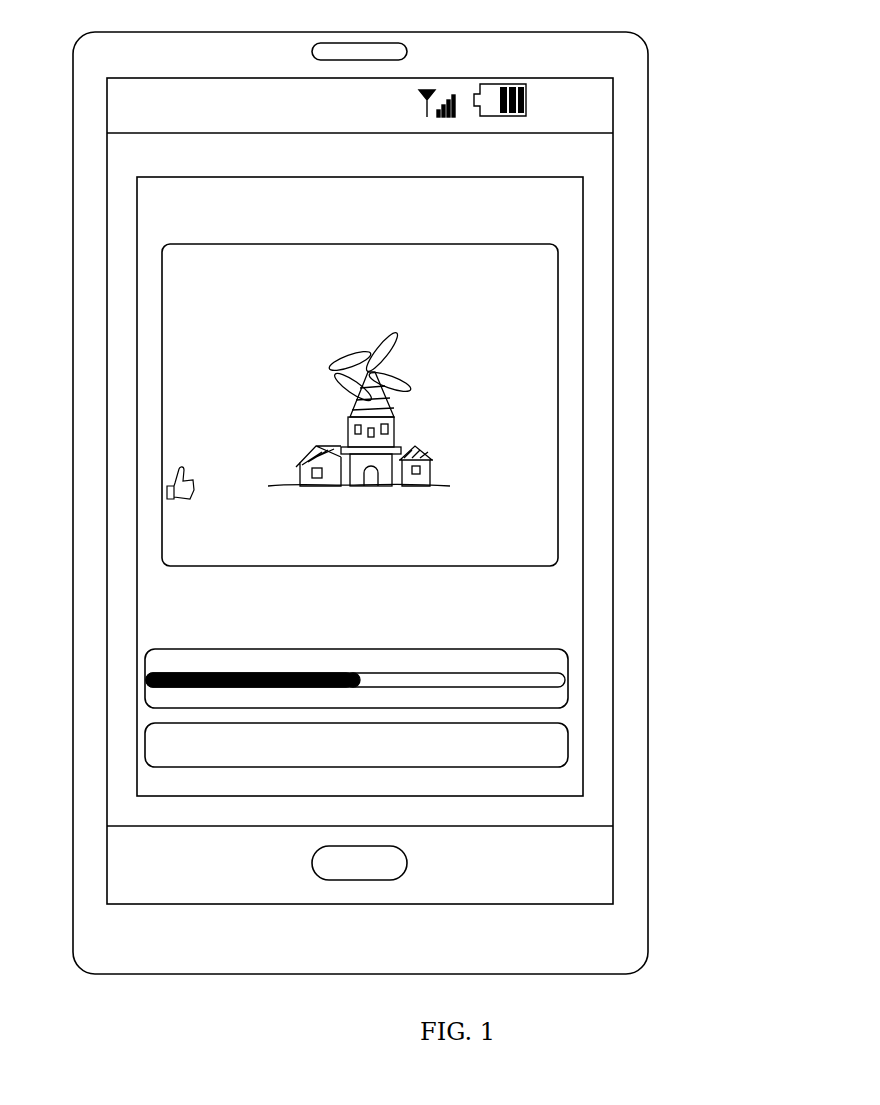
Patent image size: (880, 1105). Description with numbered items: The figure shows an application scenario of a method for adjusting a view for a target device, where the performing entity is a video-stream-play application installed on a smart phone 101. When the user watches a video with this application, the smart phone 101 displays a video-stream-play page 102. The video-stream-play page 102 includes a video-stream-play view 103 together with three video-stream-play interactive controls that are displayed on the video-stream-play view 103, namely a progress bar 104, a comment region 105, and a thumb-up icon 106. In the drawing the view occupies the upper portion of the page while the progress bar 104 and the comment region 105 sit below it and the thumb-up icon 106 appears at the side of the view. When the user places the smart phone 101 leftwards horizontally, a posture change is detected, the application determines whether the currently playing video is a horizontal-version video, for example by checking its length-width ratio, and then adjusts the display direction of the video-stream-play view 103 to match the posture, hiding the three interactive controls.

The smart phone 101 is at (647, 165).
The video-stream-play page 102 is at (583, 338).
The video-stream-play view 103 is at (558, 475).
The progress bar 104 is at (568, 662).
The comment region 105 is at (568, 740).
The thumb-up icon 106 is at (165, 495).